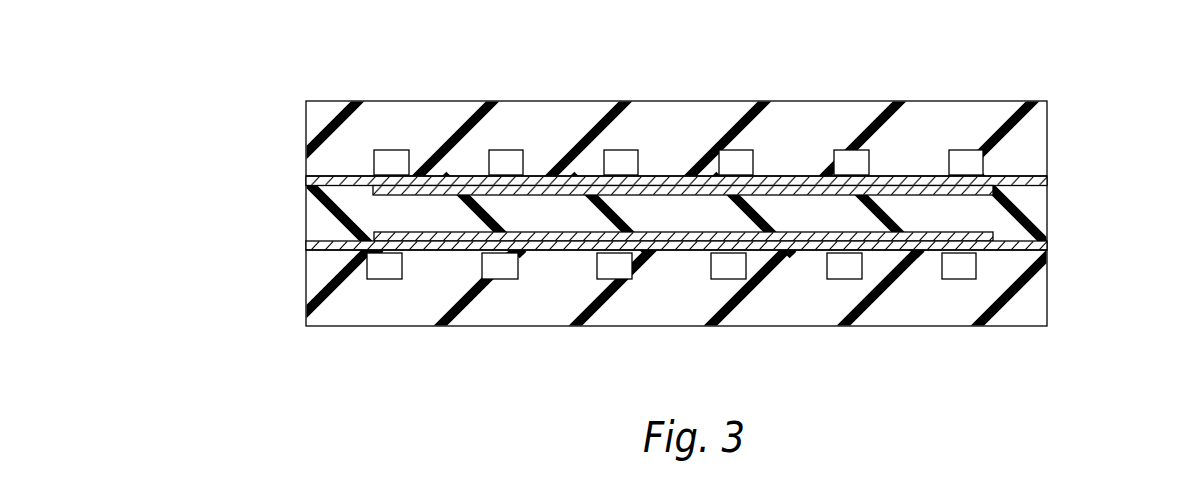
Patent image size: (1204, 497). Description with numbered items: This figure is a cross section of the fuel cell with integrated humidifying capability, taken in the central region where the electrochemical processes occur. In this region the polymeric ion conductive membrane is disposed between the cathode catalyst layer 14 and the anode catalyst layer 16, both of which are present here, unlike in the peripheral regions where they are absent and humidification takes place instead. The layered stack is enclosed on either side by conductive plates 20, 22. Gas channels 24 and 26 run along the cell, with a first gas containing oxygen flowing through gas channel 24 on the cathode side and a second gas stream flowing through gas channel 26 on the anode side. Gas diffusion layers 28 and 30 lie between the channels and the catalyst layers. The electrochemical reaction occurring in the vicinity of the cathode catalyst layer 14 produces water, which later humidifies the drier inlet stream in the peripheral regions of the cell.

The cathode catalyst layer 14 is at (1005, 201).
The anode catalyst layer 16 is at (1003, 224).
The conductive plate 20 is at (992, 108).
The conductive plate 22 is at (1027, 313).
The gas channel 24 is at (388, 150).
The gas channel 26 is at (388, 279).
The gas diffusion layer 28 is at (333, 176).
The gas diffusion layer 30 is at (315, 248).